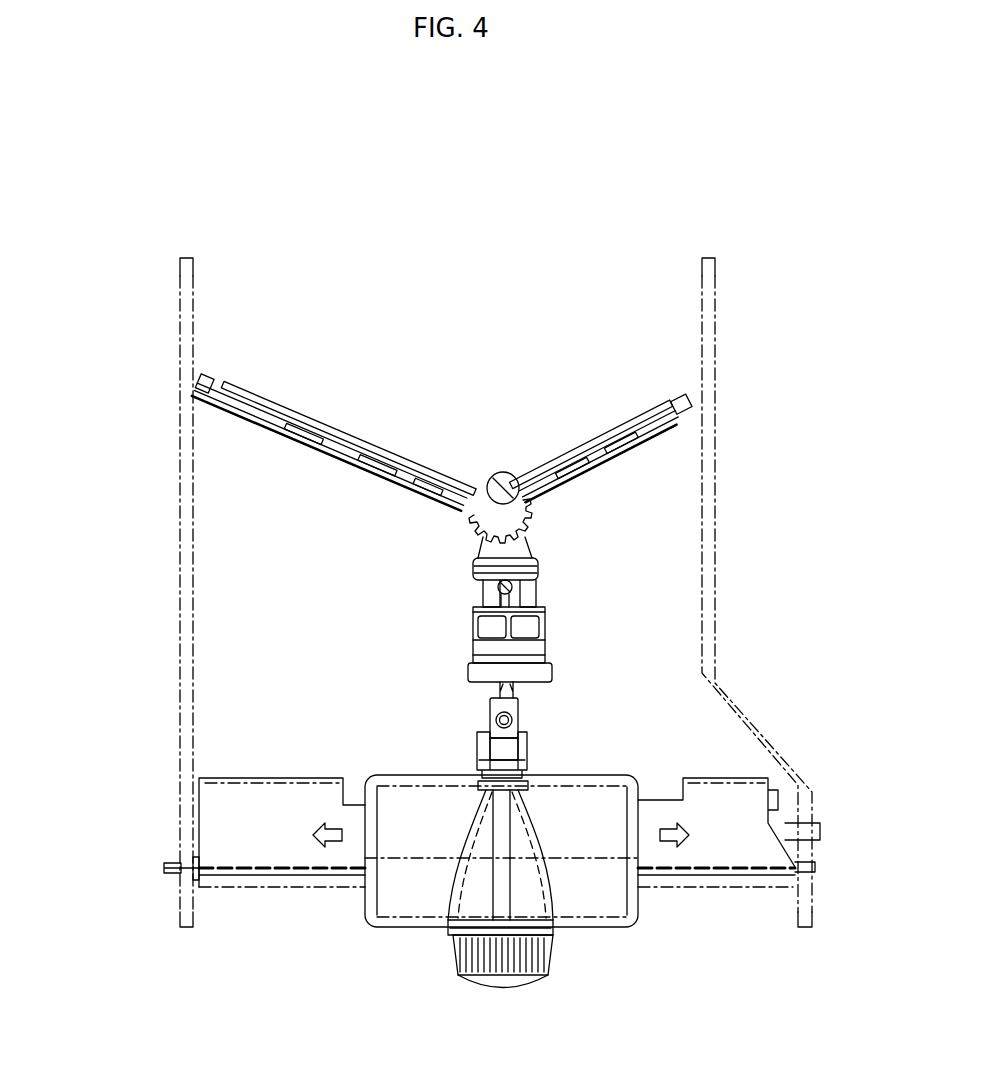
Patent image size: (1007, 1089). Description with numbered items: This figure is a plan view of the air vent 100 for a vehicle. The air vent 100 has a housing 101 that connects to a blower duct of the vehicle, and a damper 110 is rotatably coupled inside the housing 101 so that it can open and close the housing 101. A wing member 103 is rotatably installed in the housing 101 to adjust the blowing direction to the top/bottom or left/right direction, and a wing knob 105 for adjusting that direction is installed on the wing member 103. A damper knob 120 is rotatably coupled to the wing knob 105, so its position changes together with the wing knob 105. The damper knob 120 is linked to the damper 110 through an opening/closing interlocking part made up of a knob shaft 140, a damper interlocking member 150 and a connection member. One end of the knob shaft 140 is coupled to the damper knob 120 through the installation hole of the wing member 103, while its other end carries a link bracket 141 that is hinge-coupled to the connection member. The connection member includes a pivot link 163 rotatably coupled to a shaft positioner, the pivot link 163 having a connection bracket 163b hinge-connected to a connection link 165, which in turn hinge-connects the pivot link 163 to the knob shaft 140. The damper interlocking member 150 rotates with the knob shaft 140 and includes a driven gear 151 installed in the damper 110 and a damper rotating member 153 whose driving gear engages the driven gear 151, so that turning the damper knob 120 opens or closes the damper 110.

The air vent 100 is at (227, 128).
The housing 101 is at (180, 352).
The wing member 103 is at (715, 880).
The wing knob 105 is at (376, 912).
The damper 110 is at (570, 465).
The damper knob 120 is at (493, 972).
The knob shaft 140 is at (515, 883).
The link bracket 141 is at (528, 750).
The damper interlocking member 150 is at (496, 590).
The driven gear 151 is at (480, 510).
The damper rotating member 153 is at (480, 636).
The pivot link 163 is at (515, 690).
The connection bracket 163b is at (495, 712).
The connection link 165 is at (500, 743).